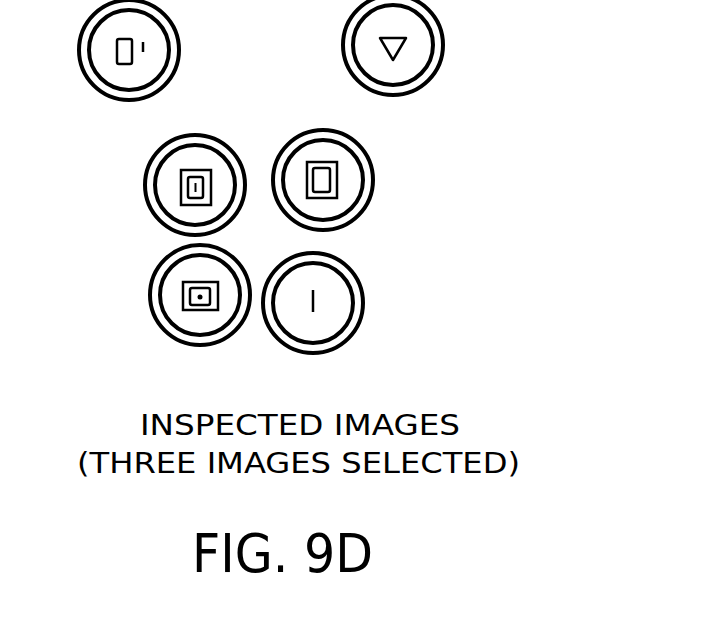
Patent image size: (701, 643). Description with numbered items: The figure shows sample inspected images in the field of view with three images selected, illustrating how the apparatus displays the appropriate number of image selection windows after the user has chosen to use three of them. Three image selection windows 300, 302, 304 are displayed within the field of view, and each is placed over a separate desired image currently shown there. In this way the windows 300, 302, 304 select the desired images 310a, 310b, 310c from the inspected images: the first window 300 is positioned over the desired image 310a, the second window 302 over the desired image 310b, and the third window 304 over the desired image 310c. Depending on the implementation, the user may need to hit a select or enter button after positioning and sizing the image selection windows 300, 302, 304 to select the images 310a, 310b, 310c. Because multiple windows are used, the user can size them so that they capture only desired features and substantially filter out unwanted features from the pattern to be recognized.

The image selection window 300 is at (180, 190).
The image selection window 302 is at (337, 173).
The image selection window 304 is at (182, 298).
The desired image 310a is at (200, 170).
The desired image 310b is at (335, 188).
The desired image 310c is at (198, 310).